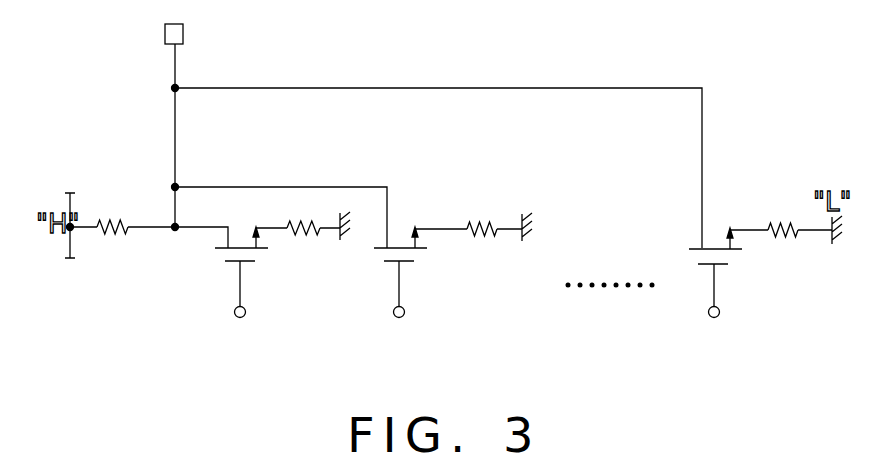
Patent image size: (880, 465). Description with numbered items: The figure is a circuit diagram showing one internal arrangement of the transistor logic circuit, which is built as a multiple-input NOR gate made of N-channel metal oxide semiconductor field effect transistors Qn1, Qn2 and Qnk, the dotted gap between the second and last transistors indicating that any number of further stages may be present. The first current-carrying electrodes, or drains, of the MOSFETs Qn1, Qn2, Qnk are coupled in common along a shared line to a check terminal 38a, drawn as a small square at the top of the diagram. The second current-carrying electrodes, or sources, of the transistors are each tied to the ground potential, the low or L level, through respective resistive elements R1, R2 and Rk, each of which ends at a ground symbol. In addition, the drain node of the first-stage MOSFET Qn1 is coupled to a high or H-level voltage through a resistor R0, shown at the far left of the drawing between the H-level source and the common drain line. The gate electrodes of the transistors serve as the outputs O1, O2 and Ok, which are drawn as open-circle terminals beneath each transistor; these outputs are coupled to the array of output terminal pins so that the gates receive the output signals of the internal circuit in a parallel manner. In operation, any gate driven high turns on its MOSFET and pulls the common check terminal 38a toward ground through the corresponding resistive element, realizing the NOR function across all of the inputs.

The check terminal 38a is at (184, 32).
The resistor R0 is at (116, 212).
The resistive element R1 is at (316, 238).
The resistive element R2 is at (485, 214).
The resistive element Rk is at (778, 215).
The N-channel MOSFET Qn1 is at (247, 262).
The N-channel MOSFET Qn2 is at (406, 262).
The N-channel MOSFET Qnk is at (731, 264).
The output O1 is at (240, 318).
The output O2 is at (399, 318).
The output Ok is at (714, 318).